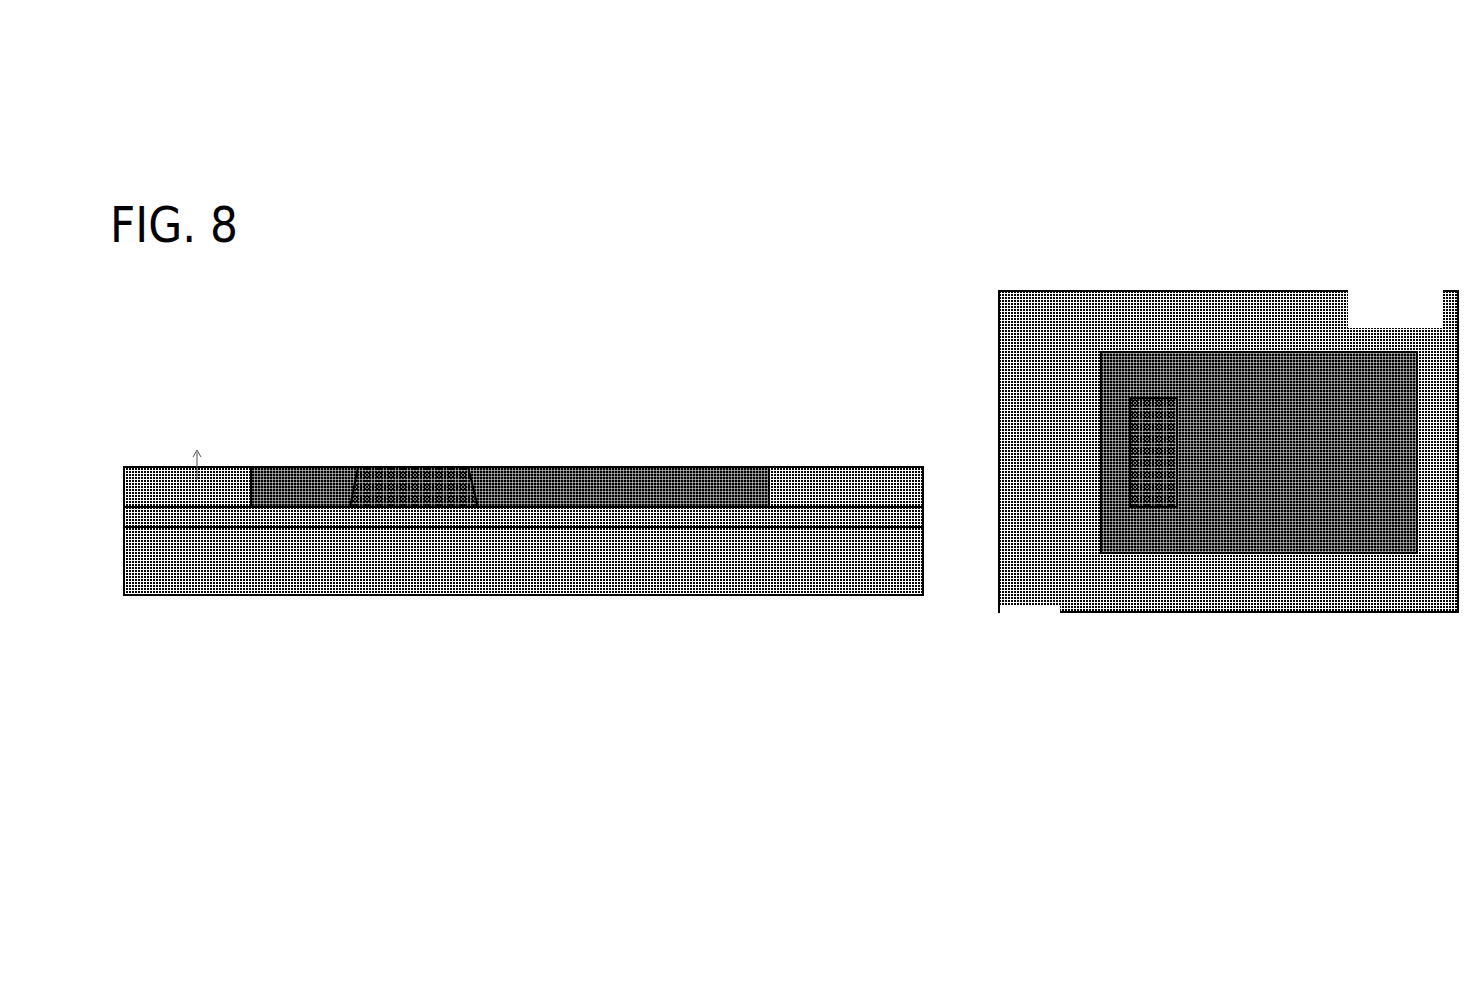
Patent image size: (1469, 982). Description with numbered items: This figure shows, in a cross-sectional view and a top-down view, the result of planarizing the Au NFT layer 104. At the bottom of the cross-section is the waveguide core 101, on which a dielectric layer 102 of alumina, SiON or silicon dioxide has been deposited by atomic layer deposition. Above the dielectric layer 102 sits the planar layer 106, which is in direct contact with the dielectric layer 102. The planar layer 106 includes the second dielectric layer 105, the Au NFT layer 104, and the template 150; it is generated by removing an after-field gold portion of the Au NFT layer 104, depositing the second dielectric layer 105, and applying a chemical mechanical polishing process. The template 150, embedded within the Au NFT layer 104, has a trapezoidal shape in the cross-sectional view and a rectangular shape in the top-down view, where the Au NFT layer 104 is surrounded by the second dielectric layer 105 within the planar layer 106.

The waveguide core 101 is at (699, 596).
The dielectric layer 102 is at (899, 524).
The Au NFT layer 104 is at (571, 466).
The second dielectric layer 105 is at (231, 411).
The planar layer 106 is at (799, 466).
The template 150 is at (388, 466).